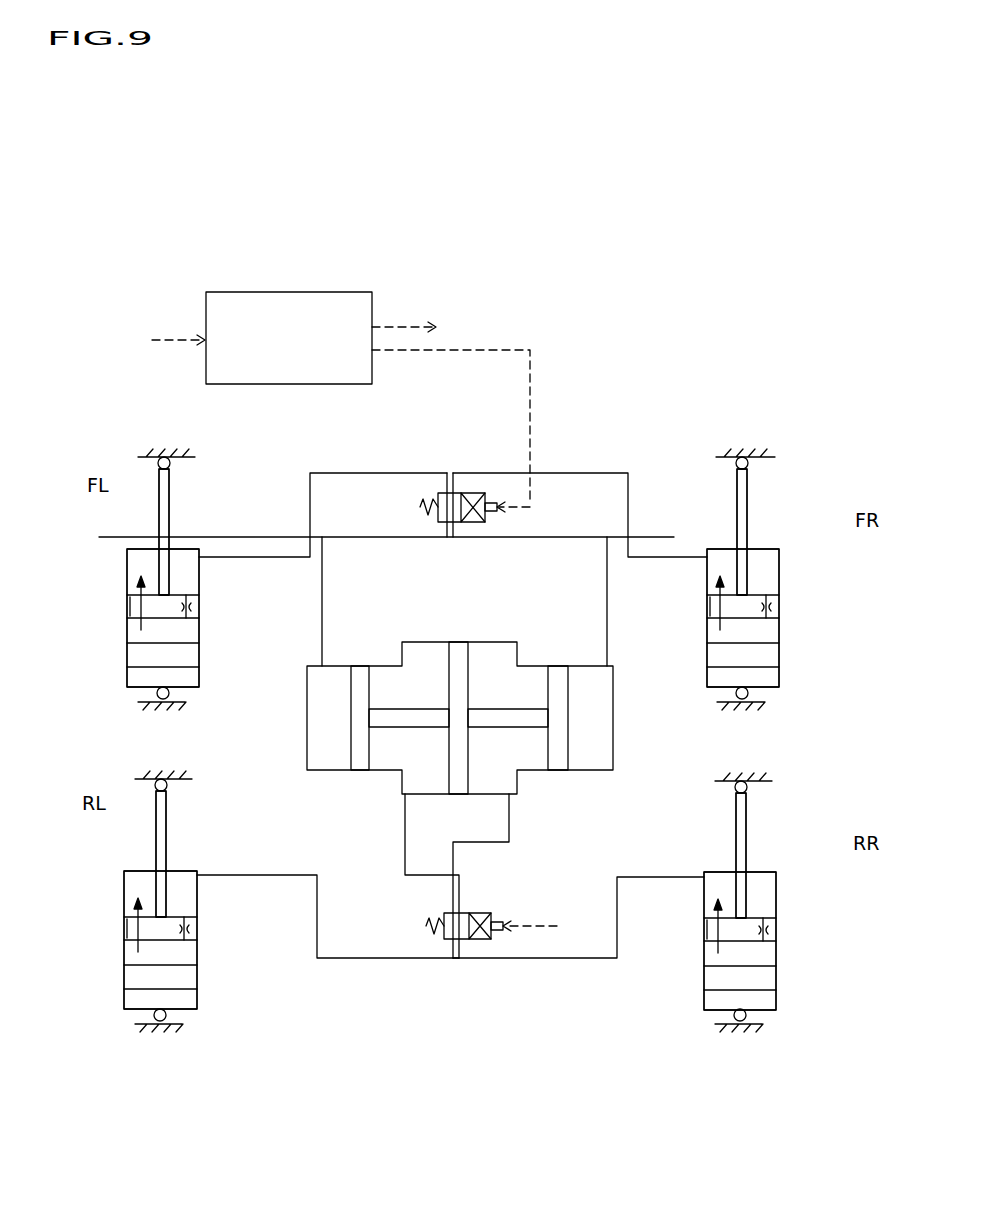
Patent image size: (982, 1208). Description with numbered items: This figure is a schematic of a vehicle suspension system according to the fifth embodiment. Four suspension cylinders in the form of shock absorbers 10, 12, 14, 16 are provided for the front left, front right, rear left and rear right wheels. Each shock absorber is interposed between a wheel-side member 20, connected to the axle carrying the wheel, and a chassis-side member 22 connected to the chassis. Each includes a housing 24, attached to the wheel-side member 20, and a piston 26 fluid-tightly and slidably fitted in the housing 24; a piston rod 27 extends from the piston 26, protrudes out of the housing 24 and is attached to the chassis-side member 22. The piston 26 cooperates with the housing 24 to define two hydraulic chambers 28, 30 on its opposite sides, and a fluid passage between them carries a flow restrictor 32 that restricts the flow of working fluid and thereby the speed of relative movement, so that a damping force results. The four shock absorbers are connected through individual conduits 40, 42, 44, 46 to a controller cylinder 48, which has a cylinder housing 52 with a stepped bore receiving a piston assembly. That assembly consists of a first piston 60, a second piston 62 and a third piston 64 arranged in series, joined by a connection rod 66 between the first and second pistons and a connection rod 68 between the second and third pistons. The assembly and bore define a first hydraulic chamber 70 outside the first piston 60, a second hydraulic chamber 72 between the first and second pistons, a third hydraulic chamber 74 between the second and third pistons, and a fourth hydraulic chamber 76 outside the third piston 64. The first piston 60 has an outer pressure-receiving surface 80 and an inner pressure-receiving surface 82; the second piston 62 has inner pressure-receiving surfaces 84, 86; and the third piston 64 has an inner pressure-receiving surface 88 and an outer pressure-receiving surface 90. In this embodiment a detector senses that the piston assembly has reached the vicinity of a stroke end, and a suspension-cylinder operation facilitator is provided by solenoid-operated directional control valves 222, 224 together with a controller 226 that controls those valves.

The shock absorber 10 is at (180, 535).
The shock absorber 12 is at (728, 537).
The shock absorber 14 is at (177, 861).
The shock absorber 16 is at (729, 860).
The wheel-side member 20 is at (140, 702).
The chassis-side member 22 is at (140, 456).
The housing 24 is at (127, 555).
The piston 26 is at (130, 606).
The piston rod 27 is at (158, 515).
The hydraulic chamber 28 is at (185, 555).
The hydraulic chamber 30 is at (127, 637).
The flow restrictor 32 is at (193, 609).
The individual conduit 40 is at (255, 557).
The individual conduit 42 is at (695, 563).
The individual conduit 44 is at (250, 877).
The individual conduit 46 is at (683, 880).
The controller cylinder 48 is at (548, 582).
The cylinder housing 52 is at (306, 670).
The first piston 60 is at (358, 672).
The second piston 62 is at (460, 645).
The third piston 64 is at (560, 668).
The connection rod 66 is at (393, 716).
The connection rod 68 is at (528, 713).
The first hydraulic chamber 70 is at (342, 723).
The second hydraulic chamber 72 is at (432, 650).
The third hydraulic chamber 74 is at (500, 645).
The fourth hydraulic chamber 76 is at (598, 718).
The outer pressure-receiving surface 80 is at (353, 752).
The inner pressure-receiving surface 82 is at (370, 757).
The inner pressure-receiving surface 84 is at (447, 784).
The inner pressure-receiving surface 86 is at (468, 786).
The inner pressure-receiving surface 88 is at (546, 758).
The outer pressure-receiving surface 90 is at (566, 756).
The solenoid-operated directional control valve 222 is at (470, 493).
The solenoid-operated directional control valve 224 is at (470, 940).
The controller 226 is at (328, 297).